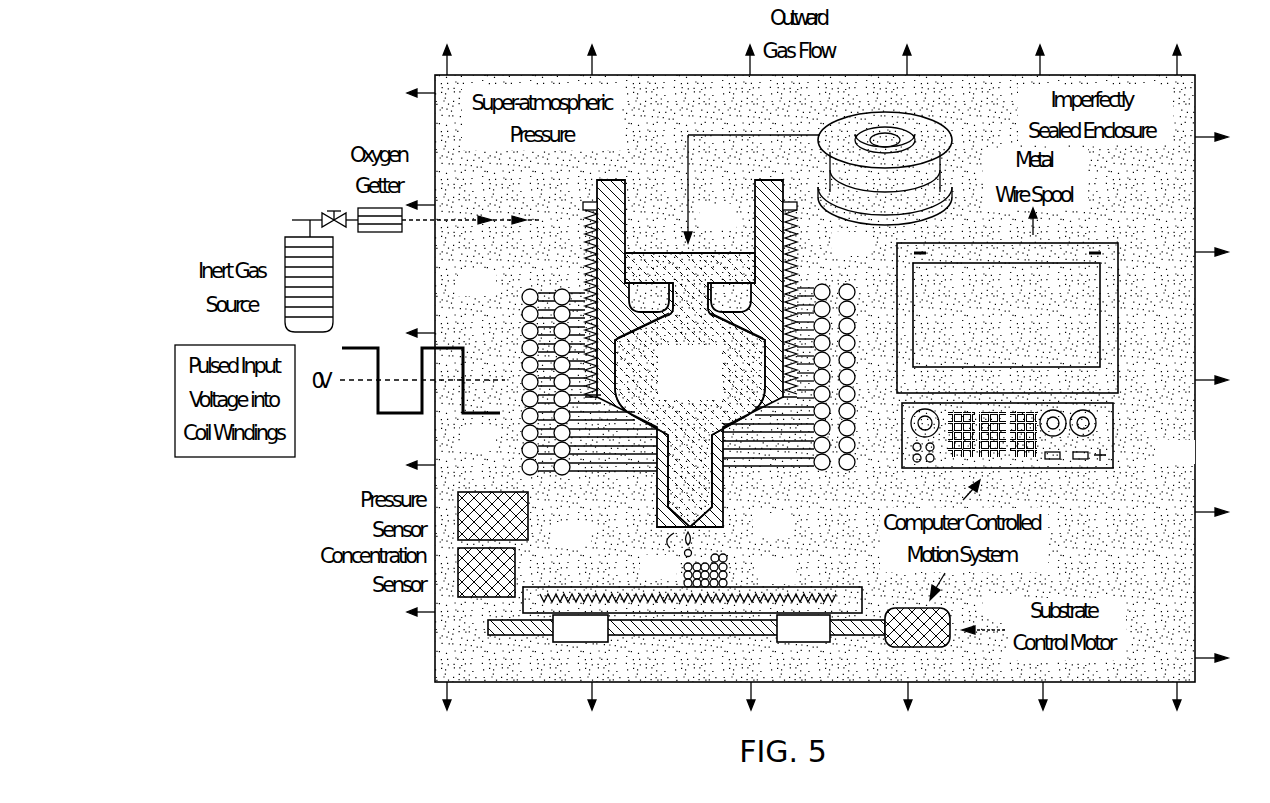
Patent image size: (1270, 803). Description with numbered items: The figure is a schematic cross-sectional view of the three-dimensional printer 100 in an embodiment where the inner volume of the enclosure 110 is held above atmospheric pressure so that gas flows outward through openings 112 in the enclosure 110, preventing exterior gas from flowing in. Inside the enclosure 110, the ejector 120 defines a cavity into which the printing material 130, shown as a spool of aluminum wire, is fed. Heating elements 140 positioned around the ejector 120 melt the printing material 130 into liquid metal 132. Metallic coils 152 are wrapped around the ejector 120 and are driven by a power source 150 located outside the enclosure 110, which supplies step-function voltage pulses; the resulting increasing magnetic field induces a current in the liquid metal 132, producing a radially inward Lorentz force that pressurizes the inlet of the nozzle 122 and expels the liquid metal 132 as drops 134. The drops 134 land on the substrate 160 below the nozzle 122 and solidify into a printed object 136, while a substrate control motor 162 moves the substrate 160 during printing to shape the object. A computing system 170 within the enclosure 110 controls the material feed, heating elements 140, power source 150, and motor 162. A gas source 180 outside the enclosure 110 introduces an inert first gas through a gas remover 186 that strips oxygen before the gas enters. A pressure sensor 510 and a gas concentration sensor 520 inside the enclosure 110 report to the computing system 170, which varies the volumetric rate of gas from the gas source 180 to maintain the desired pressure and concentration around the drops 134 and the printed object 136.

The 3D printer 100 is at (720, 398).
The enclosure 110 is at (1095, 682).
The openings 112 is at (915, 63).
The ejector 120 is at (664, 282).
The nozzle 122 is at (668, 555).
The printing material 130 is at (900, 108).
The liquid metal 132 is at (740, 267).
The drops 134 is at (700, 540).
The 3D object 136 is at (727, 557).
The heating elements 140 is at (798, 260).
The power source 150 is at (222, 457).
The metallic coils 152 is at (524, 297).
The substrate 160 is at (585, 587).
The substrate control motor 162 is at (950, 618).
The computing system 170 is at (1113, 430).
The gas source 180 is at (285, 242).
The gas remover 186 is at (378, 232).
The pressure sensor 510 is at (495, 492).
The gas concentration sensor 520 is at (470, 597).